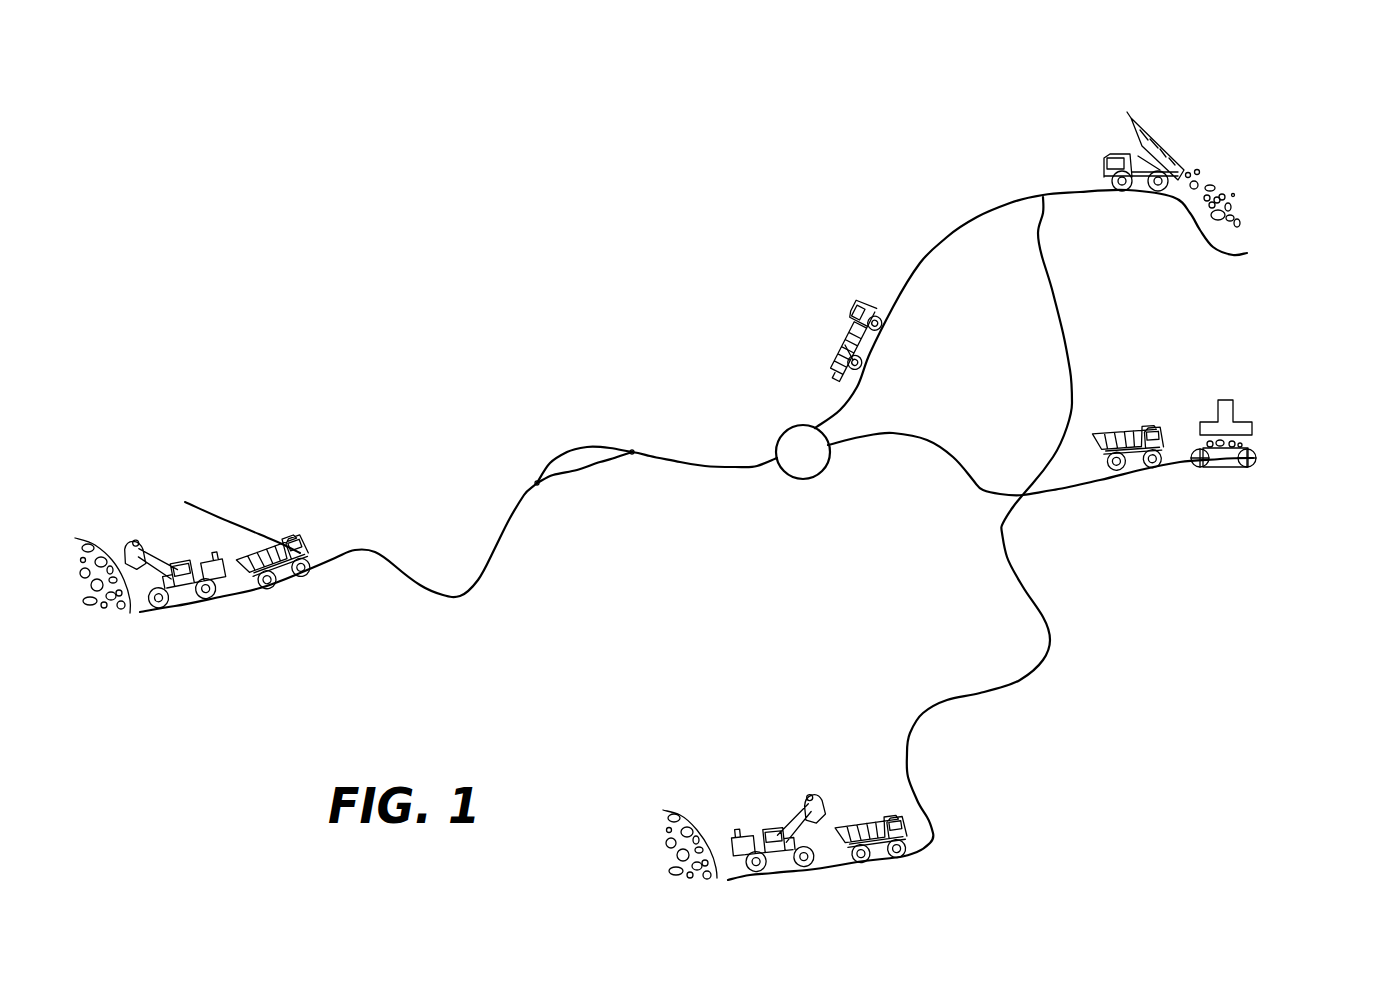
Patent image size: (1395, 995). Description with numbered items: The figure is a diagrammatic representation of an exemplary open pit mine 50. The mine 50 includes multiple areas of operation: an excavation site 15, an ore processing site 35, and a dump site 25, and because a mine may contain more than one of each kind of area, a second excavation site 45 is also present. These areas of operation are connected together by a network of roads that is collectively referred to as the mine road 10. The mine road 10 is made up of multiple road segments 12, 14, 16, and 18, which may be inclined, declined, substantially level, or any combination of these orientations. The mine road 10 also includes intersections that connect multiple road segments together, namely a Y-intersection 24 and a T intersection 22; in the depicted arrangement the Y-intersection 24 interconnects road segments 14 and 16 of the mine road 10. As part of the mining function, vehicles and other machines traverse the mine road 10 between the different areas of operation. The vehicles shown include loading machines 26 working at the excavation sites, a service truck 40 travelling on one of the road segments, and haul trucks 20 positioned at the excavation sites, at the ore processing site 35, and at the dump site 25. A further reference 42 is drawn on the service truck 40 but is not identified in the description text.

The mine road 10 is at (536, 587).
The road segment 12 is at (393, 570).
The road segment 14 is at (590, 447).
The excavation site 15 is at (186, 480).
The road segment 16 is at (573, 473).
The road segment 18 is at (947, 243).
The haul truck 20 is at (282, 547).
The T intersection 22 is at (777, 458).
The Y-intersection 24 is at (533, 485).
The dump site 25 is at (1267, 173).
The loading machine 26 is at (185, 593).
The ore processing site 35 is at (1262, 485).
The service truck 40 is at (843, 320).
The service vehicle bed 42 is at (847, 347).
The second excavation site 45 is at (708, 783).
The open pit mine 50 is at (535, 224).